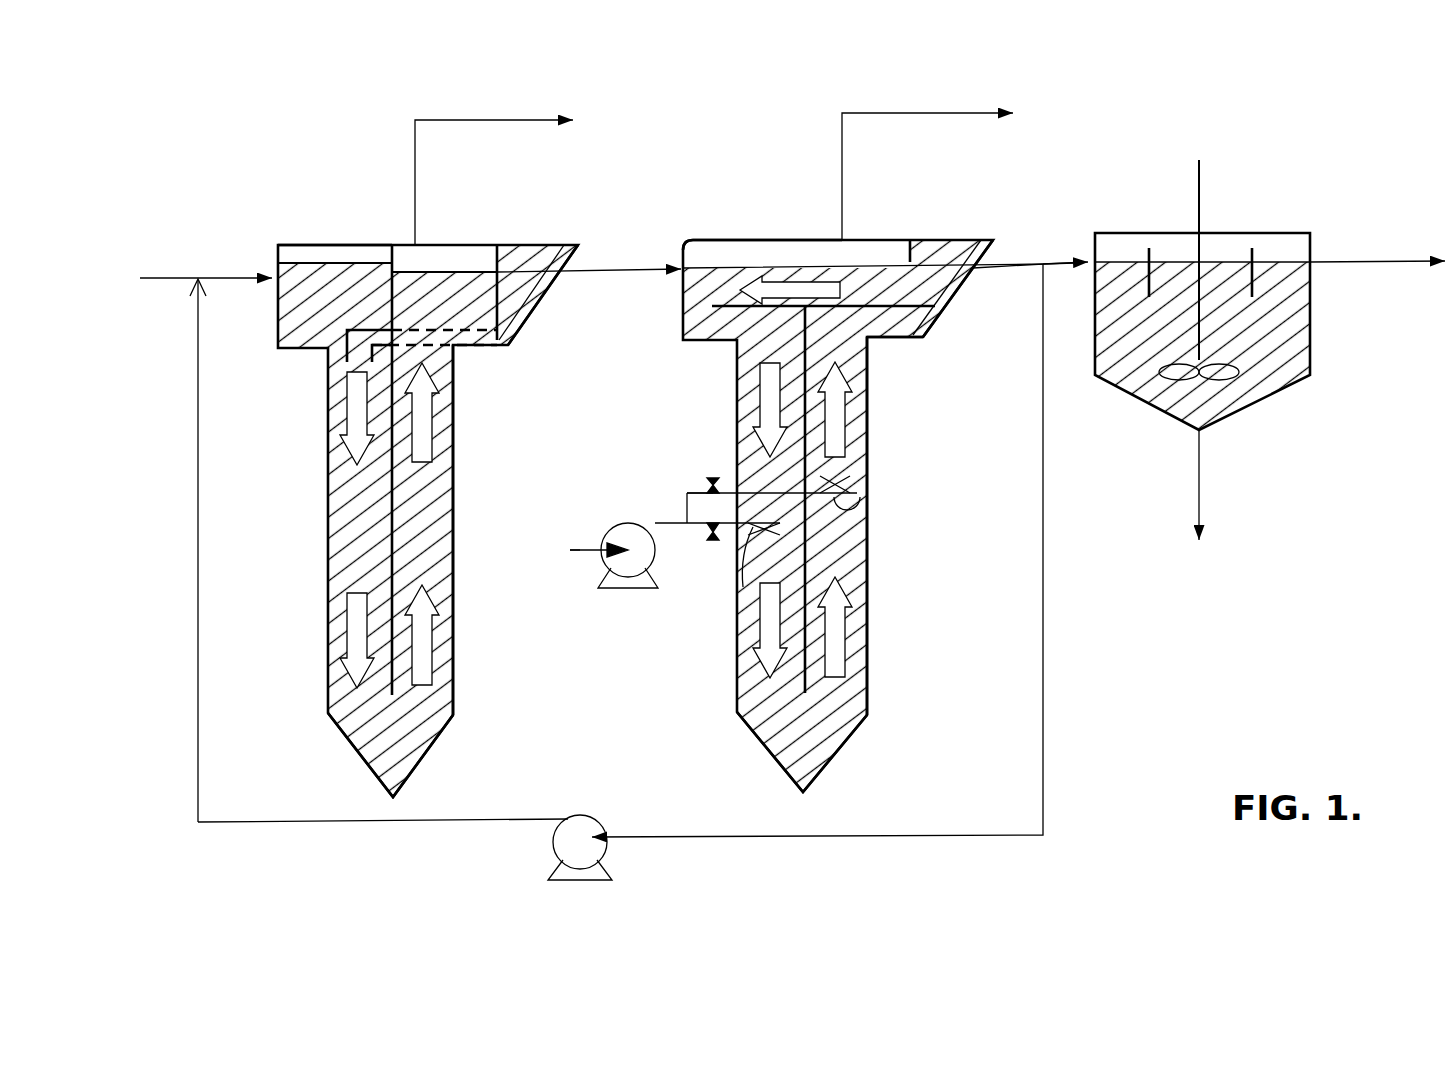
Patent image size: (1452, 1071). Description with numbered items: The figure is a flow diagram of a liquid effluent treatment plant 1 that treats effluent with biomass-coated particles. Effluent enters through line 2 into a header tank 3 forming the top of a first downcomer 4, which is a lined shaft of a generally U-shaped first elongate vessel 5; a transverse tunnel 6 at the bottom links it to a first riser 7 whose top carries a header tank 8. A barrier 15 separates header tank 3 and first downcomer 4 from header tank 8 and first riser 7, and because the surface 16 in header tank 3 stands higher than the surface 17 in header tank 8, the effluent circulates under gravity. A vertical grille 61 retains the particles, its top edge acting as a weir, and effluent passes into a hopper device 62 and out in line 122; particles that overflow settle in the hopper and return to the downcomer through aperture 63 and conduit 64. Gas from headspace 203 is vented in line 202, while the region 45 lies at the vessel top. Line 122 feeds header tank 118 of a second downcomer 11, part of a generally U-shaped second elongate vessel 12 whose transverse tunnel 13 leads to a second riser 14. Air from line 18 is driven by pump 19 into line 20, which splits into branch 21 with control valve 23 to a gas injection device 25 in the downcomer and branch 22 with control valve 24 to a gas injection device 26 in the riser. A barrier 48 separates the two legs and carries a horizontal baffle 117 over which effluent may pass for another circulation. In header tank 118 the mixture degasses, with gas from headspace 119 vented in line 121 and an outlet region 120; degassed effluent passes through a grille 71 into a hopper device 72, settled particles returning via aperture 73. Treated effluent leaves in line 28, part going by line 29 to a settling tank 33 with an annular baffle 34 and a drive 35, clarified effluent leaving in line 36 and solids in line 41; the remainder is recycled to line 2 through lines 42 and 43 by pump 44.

The liquid effluent treatment plant 1 is at (1147, 660).
The line 2 is at (171, 277).
The header tank 3 is at (277, 325).
The first downcomer 4 is at (345, 480).
The first elongate vessel 5 is at (328, 530).
The transverse tunnel 6 is at (395, 733).
The first riser 7 is at (433, 558).
The header tank 8 is at (465, 355).
The second downcomer 11 is at (737, 654).
The second elongate vessel 12 is at (863, 530).
The transverse tunnel 13 is at (805, 743).
The second riser 14 is at (850, 463).
The barrier 15 is at (380, 355).
The surface 16 is at (290, 257).
The surface 17 is at (466, 259).
The line 18 is at (583, 550).
The pump 19 is at (600, 542).
The line 20 is at (648, 525).
The branch 21 is at (690, 523).
The branch 22 is at (687, 508).
The control valve 23 is at (713, 540).
The control valve 24 is at (713, 478).
The gas injection device 25 is at (743, 600).
The gas injection device 26 is at (863, 495).
The line 28 is at (1008, 262).
The line 29 is at (1062, 262).
The settling tank 33 is at (1092, 370).
The annular baffle 34 is at (1253, 252).
The drive 35 is at (1200, 192).
The line 36 is at (1385, 260).
The line 41 is at (1200, 480).
The line 42 is at (1042, 538).
The line 43 is at (370, 822).
The pump 44 is at (547, 843).
The vessel top 45 is at (312, 256).
The barrier 48 is at (840, 560).
The vertical grille 61 is at (542, 248).
The hopper device 62 is at (547, 295).
The aperture 63 is at (465, 350).
The conduit 64 is at (445, 350).
The grille 71 is at (950, 243).
The hopper device 72 is at (955, 290).
The aperture 73 is at (873, 347).
The horizontal baffle 117 is at (918, 370).
The header tank 118 is at (700, 229).
The headspace 119 is at (751, 229).
The outlet opening 120 is at (807, 229).
The line 121 is at (905, 113).
The line 122 is at (632, 268).
The line 202 is at (450, 120).
The headspace 203 is at (403, 257).